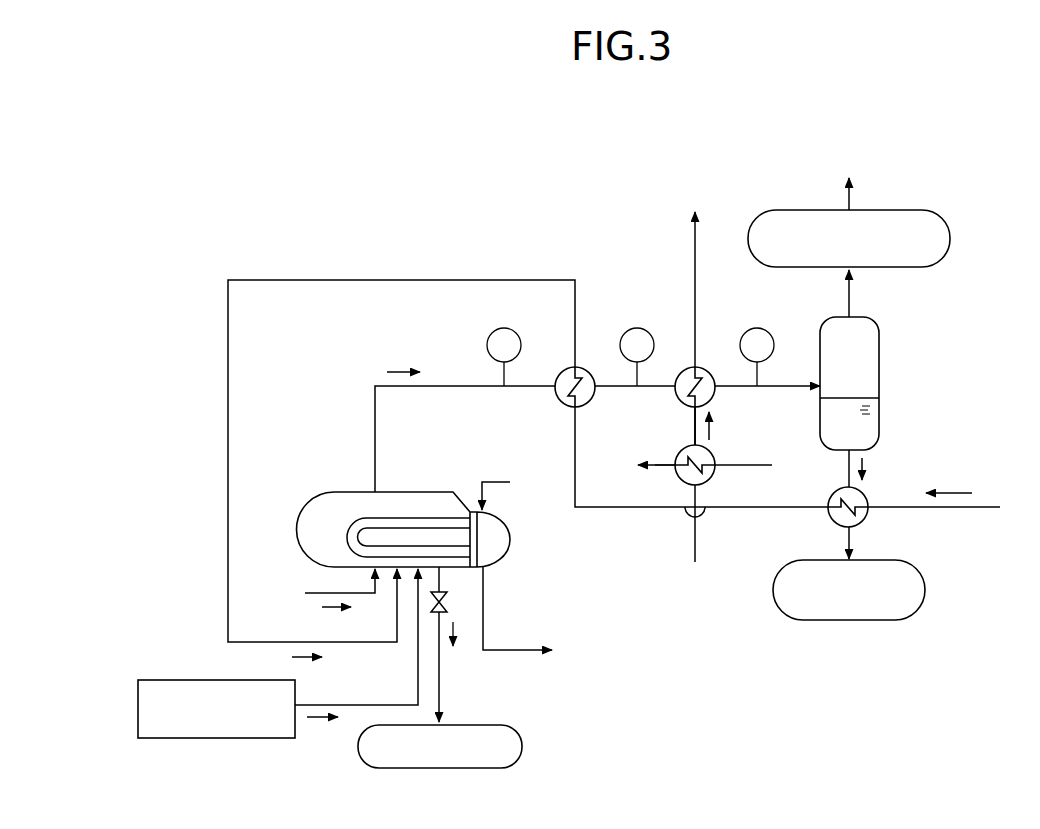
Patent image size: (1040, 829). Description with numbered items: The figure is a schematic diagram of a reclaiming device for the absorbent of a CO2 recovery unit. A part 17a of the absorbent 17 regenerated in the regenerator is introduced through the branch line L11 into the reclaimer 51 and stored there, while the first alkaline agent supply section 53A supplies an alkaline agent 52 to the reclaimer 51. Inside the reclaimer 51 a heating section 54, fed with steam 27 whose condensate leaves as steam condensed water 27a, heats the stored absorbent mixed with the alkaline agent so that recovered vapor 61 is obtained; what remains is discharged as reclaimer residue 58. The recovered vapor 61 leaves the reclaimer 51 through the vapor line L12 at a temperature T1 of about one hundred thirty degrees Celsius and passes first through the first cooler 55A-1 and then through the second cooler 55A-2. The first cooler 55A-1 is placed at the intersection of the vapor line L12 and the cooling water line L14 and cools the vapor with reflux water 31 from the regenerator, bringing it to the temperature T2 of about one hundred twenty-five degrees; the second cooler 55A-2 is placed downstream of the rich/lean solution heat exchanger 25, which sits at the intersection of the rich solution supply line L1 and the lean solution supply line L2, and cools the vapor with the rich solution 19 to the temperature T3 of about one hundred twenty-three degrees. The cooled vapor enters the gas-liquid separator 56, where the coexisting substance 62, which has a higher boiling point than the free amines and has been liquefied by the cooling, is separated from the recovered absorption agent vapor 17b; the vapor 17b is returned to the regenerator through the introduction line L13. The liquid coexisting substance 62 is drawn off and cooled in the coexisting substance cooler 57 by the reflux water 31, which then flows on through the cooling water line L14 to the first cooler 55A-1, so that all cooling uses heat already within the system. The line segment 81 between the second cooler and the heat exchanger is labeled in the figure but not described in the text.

The reclaimer 51 is at (427, 478).
The heating section 54 is at (348, 533).
The recovered vapor 61 is at (397, 368).
The steam 27 is at (489, 482).
The steam condensed water 27a is at (512, 648).
The part of the absorbent 17a is at (322, 607).
The reflux water 31 is at (291, 657).
The first alkaline agent supply section 53A is at (296, 700).
The alkaline agent 52 is at (324, 720).
The reclaimer residue 58 is at (483, 724).
The first cooler 55A-1 is at (594, 372).
The second cooler 55A-2 is at (710, 369).
The connection line 81 is at (702, 402).
The rich solution 19 is at (711, 428).
The rich/lean solution heat exchanger 25 is at (675, 455).
The absorbent 17 is at (724, 478).
The first gas-liquid separator 56 is at (886, 356).
The coexisting substance 62 is at (866, 462).
The coexisting substance cooler 57 is at (866, 518).
The recovered absorption agent vapor 17b is at (952, 238).
The rich solution supply line L1 is at (761, 460).
The lean solution supply line L2 is at (693, 425).
The branch line L11 is at (322, 592).
The vapor line L12 is at (447, 384).
The introduction line L13 is at (851, 200).
The cooling water line L14 is at (294, 640).
The temperature of recovered vapor T1 is at (504, 357).
The temperature after first cooler T2 is at (637, 357).
The temperature after second cooler T3 is at (757, 357).